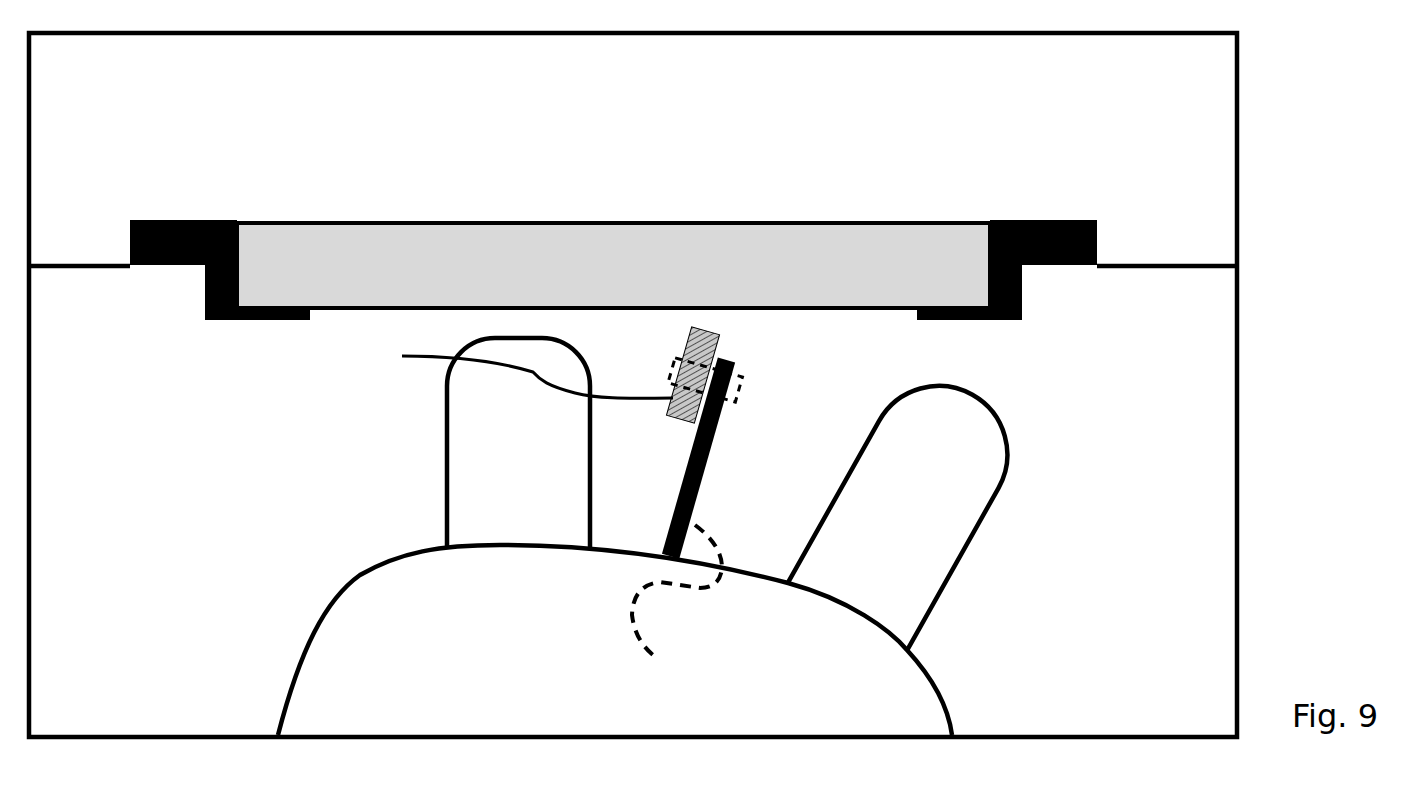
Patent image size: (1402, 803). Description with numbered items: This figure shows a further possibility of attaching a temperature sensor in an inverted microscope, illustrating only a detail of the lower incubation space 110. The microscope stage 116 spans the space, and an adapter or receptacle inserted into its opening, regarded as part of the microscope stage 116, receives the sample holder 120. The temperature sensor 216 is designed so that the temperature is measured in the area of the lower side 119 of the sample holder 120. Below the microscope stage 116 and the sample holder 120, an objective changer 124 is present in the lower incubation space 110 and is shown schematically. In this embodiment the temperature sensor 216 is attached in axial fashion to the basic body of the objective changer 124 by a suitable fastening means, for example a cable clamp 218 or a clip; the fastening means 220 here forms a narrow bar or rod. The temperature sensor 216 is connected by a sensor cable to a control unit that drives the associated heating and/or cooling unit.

The lower incubation space 110 is at (1220, 142).
The microscope stage 116 is at (60, 266).
The lower side of the sample holder 119 is at (329, 310).
The sample holder 120 is at (255, 233).
The objective changer 124 is at (885, 685).
The temperature sensor 216 is at (505, 370).
The cable clamp 218 is at (738, 388).
The fastening means 220 is at (713, 453).